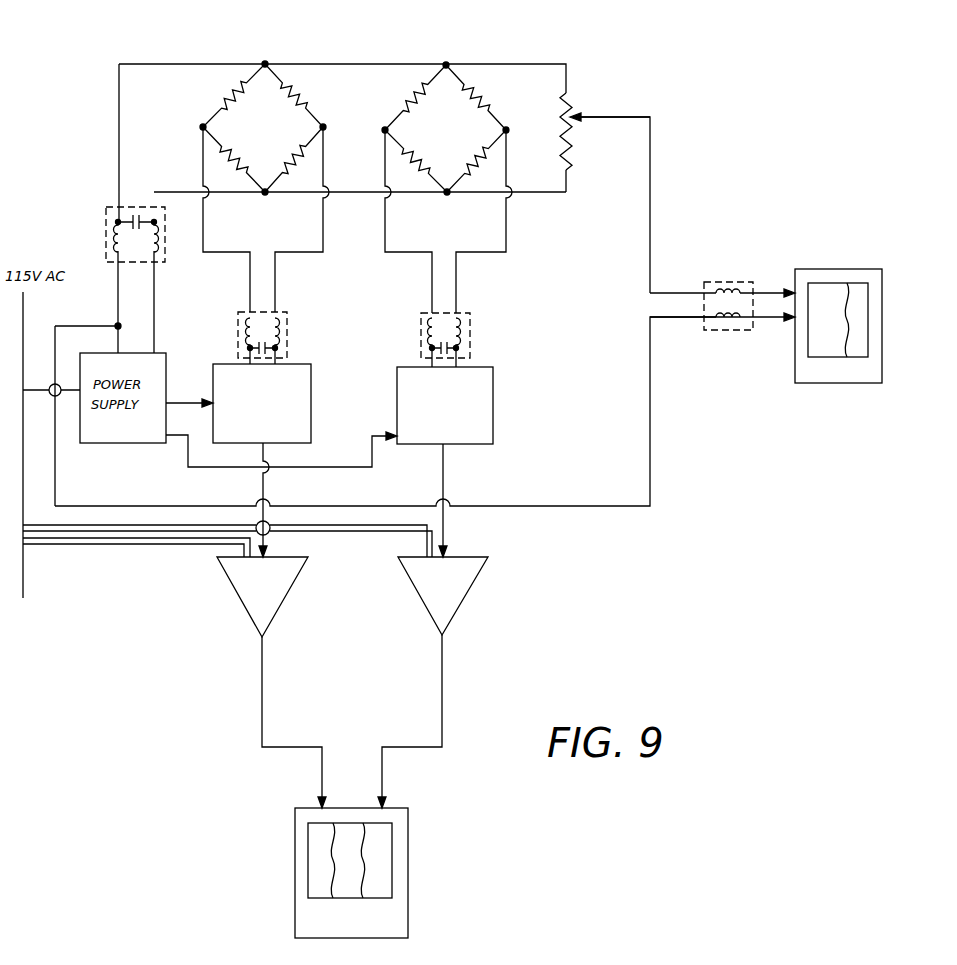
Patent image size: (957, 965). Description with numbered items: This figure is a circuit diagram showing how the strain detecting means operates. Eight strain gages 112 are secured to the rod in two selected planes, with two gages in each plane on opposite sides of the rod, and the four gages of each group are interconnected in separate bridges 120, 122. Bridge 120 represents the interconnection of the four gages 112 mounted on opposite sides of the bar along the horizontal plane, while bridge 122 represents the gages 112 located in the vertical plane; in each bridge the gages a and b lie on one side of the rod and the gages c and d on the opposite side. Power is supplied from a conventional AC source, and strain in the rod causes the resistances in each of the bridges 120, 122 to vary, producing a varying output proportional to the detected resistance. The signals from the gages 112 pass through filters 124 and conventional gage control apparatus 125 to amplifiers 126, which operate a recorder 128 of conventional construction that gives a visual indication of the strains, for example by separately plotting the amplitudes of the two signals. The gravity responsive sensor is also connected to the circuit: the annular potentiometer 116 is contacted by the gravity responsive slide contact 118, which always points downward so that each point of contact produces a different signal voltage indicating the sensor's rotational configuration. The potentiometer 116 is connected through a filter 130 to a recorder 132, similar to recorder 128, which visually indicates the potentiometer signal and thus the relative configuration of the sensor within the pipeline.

The strain gage 112 is at (230, 93).
The potentiometer 116 is at (562, 116).
The slide contact 118 is at (590, 118).
The bridge 120 is at (271, 46).
The bridge 122 is at (455, 47).
The filter 124 is at (288, 324).
The gage control apparatus 125 is at (372, 373).
The amplifier 126 is at (238, 599).
The recorder 128 is at (409, 912).
The filter 130 is at (717, 332).
The recorder 132 is at (848, 383).